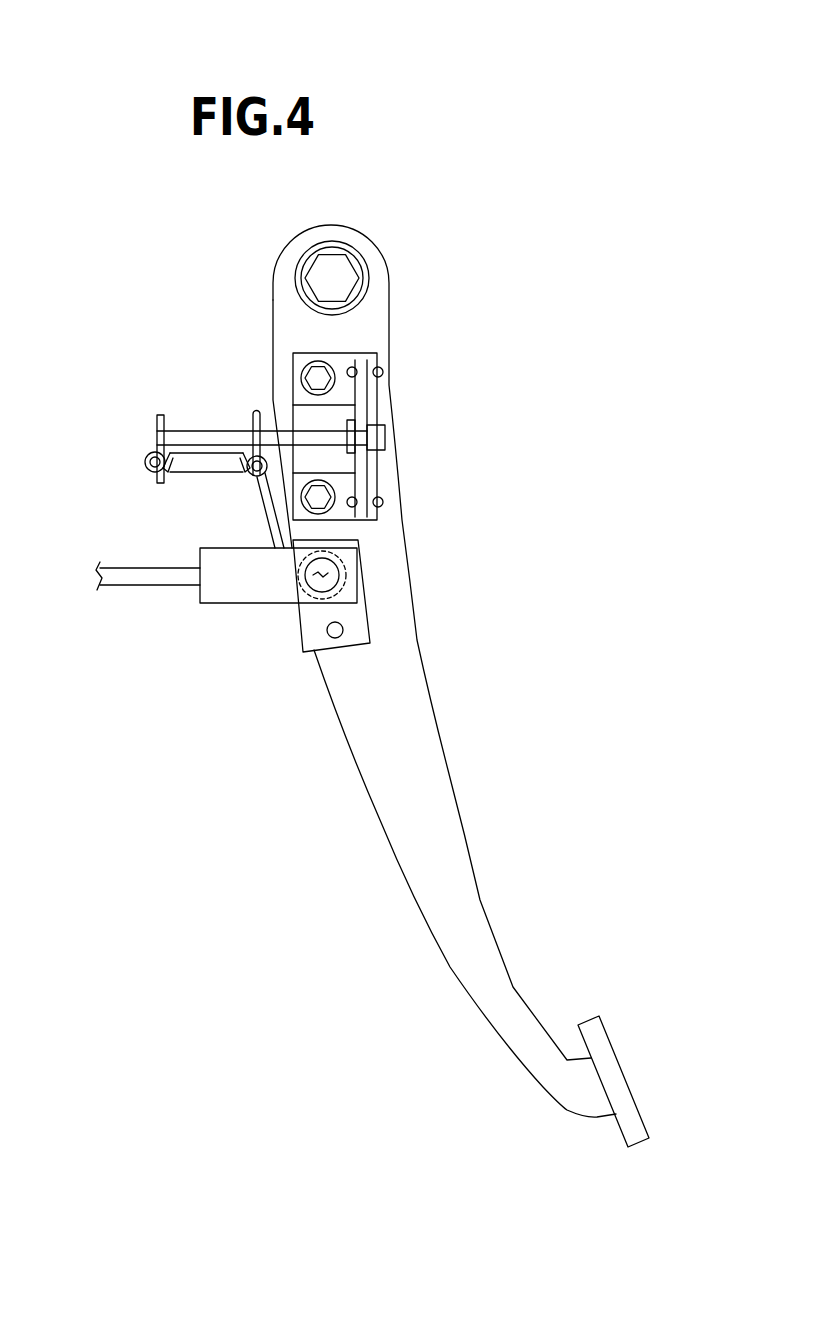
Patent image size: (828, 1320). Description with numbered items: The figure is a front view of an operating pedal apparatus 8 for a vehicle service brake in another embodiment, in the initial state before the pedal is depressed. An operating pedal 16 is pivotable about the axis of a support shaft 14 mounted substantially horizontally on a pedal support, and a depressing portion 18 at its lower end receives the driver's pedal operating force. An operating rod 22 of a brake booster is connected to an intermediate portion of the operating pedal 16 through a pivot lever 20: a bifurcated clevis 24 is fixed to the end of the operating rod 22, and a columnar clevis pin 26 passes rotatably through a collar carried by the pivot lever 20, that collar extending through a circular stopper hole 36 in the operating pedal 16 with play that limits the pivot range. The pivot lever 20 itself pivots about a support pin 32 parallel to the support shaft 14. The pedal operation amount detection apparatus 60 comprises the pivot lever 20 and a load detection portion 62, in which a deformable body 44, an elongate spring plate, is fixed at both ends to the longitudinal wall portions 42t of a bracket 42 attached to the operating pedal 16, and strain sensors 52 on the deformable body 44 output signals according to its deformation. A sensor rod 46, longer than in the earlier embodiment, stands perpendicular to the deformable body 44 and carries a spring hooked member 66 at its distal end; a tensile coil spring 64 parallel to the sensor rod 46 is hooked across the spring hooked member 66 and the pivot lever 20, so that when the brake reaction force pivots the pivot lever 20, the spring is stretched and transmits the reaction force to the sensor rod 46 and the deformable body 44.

The operating pedal apparatus 8 is at (242, 939).
The support shaft 14 is at (337, 278).
The operating pedal 16 is at (435, 822).
The depressing portion 18 is at (613, 1073).
The pivot lever 20 is at (277, 530).
The operating rod 22 is at (129, 583).
The clevis 24 is at (234, 590).
The clevis pin 26 is at (303, 580).
The support pin 32 is at (337, 642).
The stopper hole 36 is at (347, 608).
The bracket 42 is at (340, 350).
The longitudinal wall portions 42t is at (387, 370).
The deformable body 44 is at (385, 455).
The sensor rod 46 is at (199, 440).
The strain sensors 52 is at (283, 404).
The pedal operation amount detection apparatus 60 is at (114, 374).
The load detection portion 62 is at (489, 396).
The tensile coil spring 64 is at (183, 474).
The spring hooked member 66 is at (157, 438).